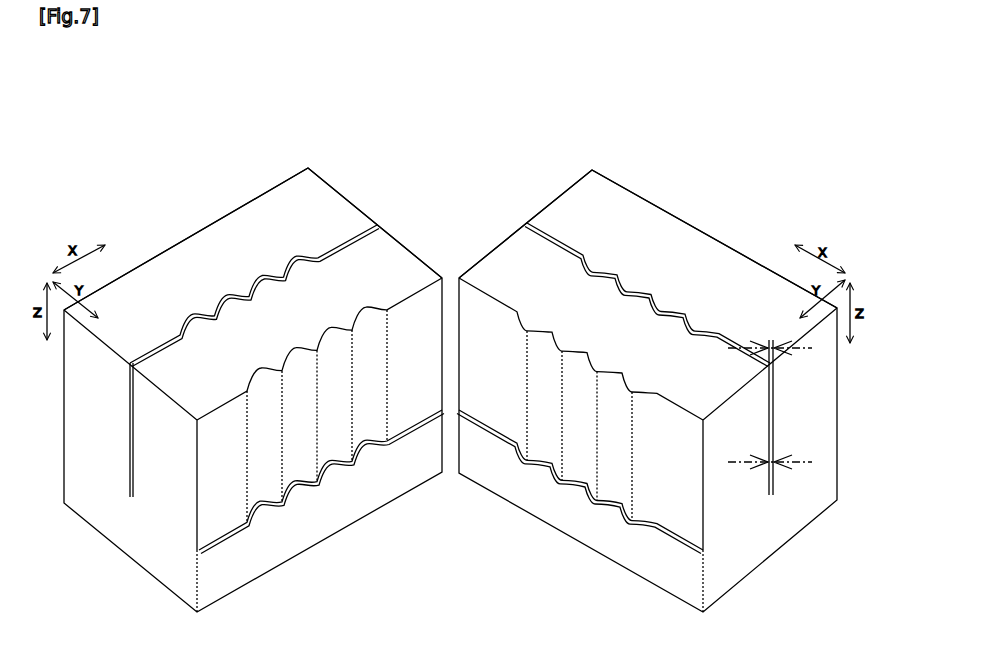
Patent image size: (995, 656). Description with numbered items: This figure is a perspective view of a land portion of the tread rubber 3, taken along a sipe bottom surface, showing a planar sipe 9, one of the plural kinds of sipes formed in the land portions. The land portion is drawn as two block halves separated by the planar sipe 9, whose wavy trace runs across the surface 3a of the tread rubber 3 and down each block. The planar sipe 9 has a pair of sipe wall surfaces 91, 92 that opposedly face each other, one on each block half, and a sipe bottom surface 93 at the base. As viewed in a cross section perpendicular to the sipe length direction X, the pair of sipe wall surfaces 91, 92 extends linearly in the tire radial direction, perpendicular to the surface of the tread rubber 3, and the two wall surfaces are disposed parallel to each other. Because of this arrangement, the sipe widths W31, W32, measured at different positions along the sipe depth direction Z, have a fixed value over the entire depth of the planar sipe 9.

The tread rubber 3 is at (801, 157).
The top surface of block 3a is at (293, 193).
The planar sipe 9 is at (246, 291).
The sipe wall surface 91 is at (228, 508).
The sipe wall surface 92 is at (677, 507).
The sipe bottom surface 93 is at (135, 481).
The sipe width W31 is at (800, 353).
The sipe width W32 is at (748, 468).